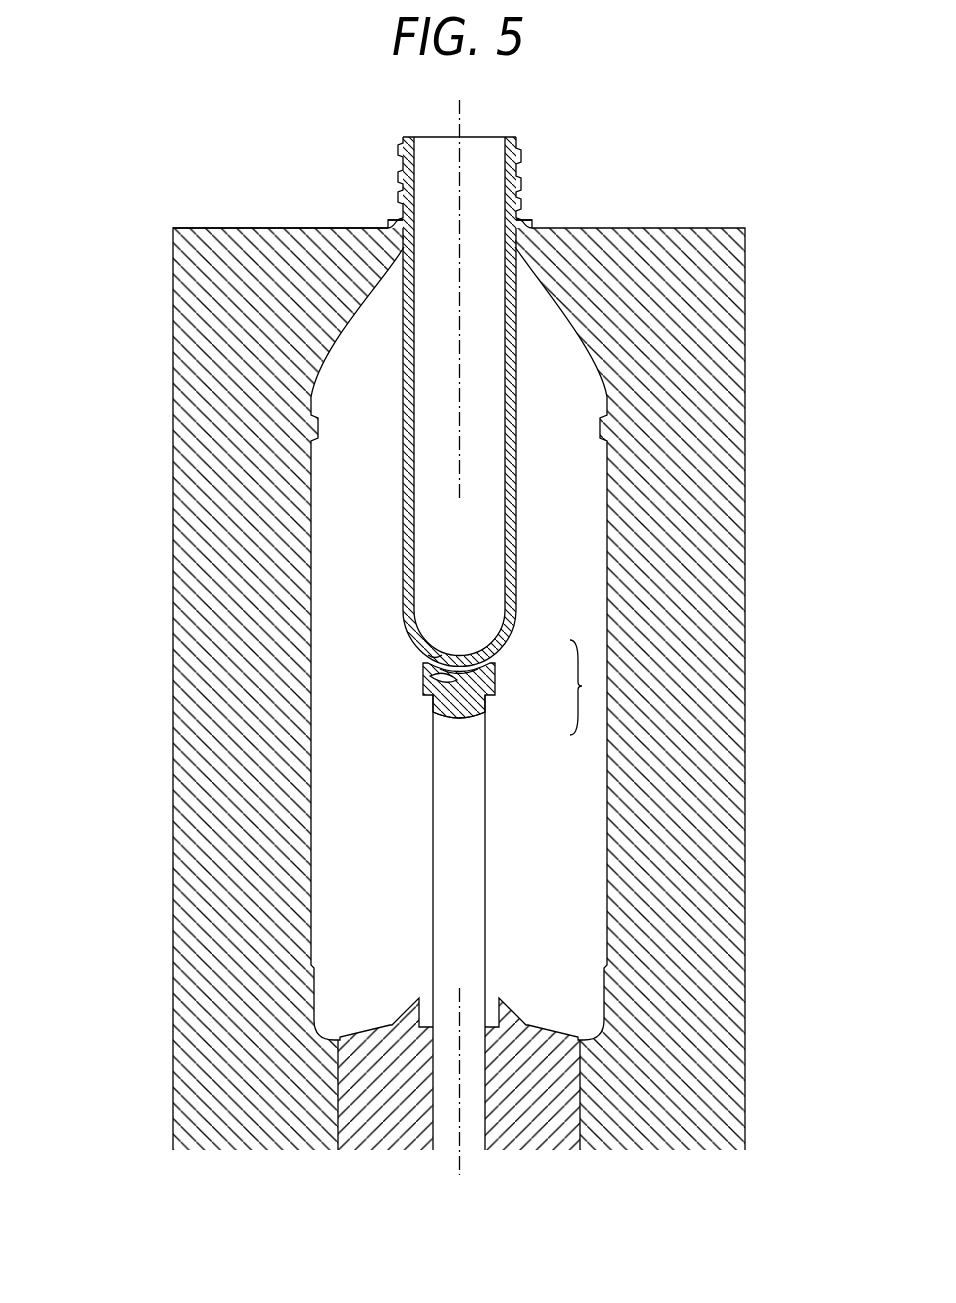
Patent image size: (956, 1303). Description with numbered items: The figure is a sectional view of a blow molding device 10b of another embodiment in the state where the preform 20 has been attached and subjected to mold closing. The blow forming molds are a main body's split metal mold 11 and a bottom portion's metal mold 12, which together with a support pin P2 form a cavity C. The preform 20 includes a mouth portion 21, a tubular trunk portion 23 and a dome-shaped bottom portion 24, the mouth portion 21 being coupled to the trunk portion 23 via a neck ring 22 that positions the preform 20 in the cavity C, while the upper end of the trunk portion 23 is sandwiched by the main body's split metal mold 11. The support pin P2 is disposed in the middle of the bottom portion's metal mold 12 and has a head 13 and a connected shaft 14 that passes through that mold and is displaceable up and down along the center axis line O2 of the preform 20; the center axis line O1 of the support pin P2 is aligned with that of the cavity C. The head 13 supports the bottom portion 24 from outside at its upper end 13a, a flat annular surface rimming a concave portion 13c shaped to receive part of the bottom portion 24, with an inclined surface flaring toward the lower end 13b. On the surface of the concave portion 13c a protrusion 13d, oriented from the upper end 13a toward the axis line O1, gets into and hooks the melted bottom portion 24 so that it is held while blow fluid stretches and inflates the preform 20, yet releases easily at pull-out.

The blow molding device 10b is at (400, 643).
The main body's split metal mold 11 is at (285, 273).
The bottom portion's metal mold 12 is at (380, 1103).
The head 13 is at (496, 665).
The upper end 13a is at (428, 657).
The lower end 13b is at (432, 702).
The concave portion 13c is at (430, 678).
The protrusion 13d is at (471, 660).
The shaft 14 is at (478, 725).
The preform 20 is at (463, 412).
The mouth portion 21 is at (400, 166).
The neck ring 22 is at (522, 225).
The trunk portion 23 is at (517, 500).
The bottom portion 24 is at (412, 643).
The cavity C is at (385, 809).
The support pin P2 is at (594, 687).
The center axis line of the support pin O1 is at (464, 1104).
The center axis line of the preform O2 is at (462, 283).